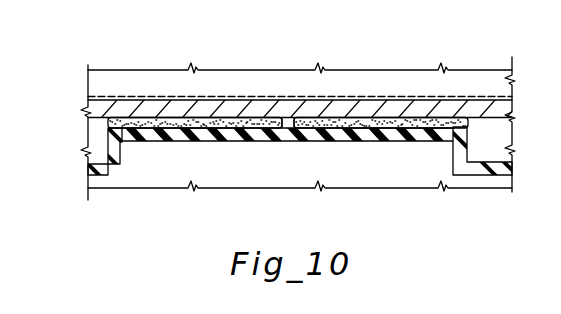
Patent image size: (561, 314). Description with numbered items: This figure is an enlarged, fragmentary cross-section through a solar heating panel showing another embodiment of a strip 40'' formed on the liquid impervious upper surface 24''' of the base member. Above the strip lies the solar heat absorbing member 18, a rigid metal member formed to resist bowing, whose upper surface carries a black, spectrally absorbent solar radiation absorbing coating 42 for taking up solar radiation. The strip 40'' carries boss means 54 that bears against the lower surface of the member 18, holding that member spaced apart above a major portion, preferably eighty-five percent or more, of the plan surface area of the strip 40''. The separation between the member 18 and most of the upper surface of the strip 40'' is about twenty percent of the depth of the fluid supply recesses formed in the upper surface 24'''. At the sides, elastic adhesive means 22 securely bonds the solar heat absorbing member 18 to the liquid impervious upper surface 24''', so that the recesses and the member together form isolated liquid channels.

The solar heat absorbing member 18 is at (476, 108).
The solar radiation absorbing coating 42 is at (396, 98).
The strip 40'' is at (288, 74).
The boss means 54 is at (285, 120).
The liquid impervious upper surface 24''' is at (286, 154).
The elastic adhesive means 22 is at (108, 126).